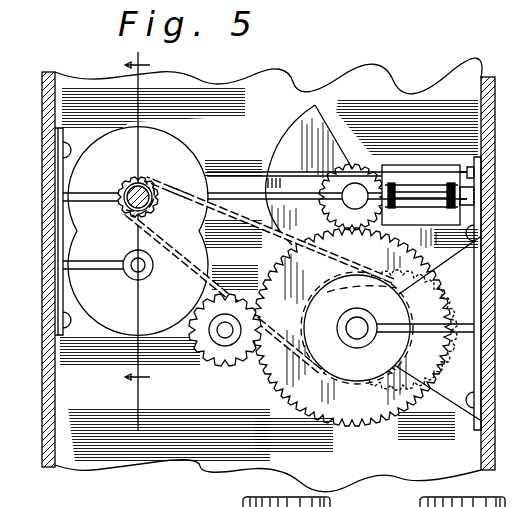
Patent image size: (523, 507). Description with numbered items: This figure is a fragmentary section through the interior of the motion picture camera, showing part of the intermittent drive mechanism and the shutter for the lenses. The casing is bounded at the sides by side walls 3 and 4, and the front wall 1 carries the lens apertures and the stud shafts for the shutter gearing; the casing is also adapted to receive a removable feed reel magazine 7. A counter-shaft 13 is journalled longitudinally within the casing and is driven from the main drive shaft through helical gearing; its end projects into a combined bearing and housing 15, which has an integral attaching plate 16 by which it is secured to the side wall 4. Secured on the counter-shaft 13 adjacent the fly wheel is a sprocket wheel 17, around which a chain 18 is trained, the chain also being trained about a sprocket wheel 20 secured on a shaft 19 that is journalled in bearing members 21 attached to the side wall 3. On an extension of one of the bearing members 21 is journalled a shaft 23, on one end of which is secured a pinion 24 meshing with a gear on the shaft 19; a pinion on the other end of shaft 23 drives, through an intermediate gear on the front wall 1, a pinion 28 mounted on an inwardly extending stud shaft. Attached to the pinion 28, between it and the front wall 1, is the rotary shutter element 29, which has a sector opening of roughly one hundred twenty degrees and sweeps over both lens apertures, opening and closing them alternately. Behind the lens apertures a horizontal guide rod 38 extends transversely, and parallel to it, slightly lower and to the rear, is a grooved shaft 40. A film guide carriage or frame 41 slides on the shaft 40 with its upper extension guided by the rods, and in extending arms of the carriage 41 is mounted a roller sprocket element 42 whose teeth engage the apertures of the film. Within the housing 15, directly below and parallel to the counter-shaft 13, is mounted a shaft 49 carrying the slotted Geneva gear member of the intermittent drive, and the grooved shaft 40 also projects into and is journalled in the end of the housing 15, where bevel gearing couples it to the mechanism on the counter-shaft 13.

The front wall 1 is at (363, 467).
The side wall 3 is at (488, 385).
The side wall 4 is at (45, 393).
The feed reel magazine 7 is at (137, 235).
The counter-shaft 13 is at (141, 188).
The combined bearing and housing 15 is at (138, 231).
The attaching plate 16 is at (62, 172).
The sprocket wheel 17 is at (150, 208).
The chain 18 is at (188, 212).
The shaft 19 is at (360, 327).
The sprocket wheel 20 is at (355, 327).
The bearing members 21 is at (462, 372).
The shaft 23 is at (228, 335).
The pinion 24 is at (220, 347).
The pinion 28 is at (352, 168).
The rotary shutter element 29 is at (309, 175).
The guide rod 38 is at (402, 172).
The grooved shaft 40 is at (228, 195).
The film guide carriage 41 is at (421, 196).
The roller sprocket element 42 is at (420, 196).
The shaft 49 is at (138, 272).